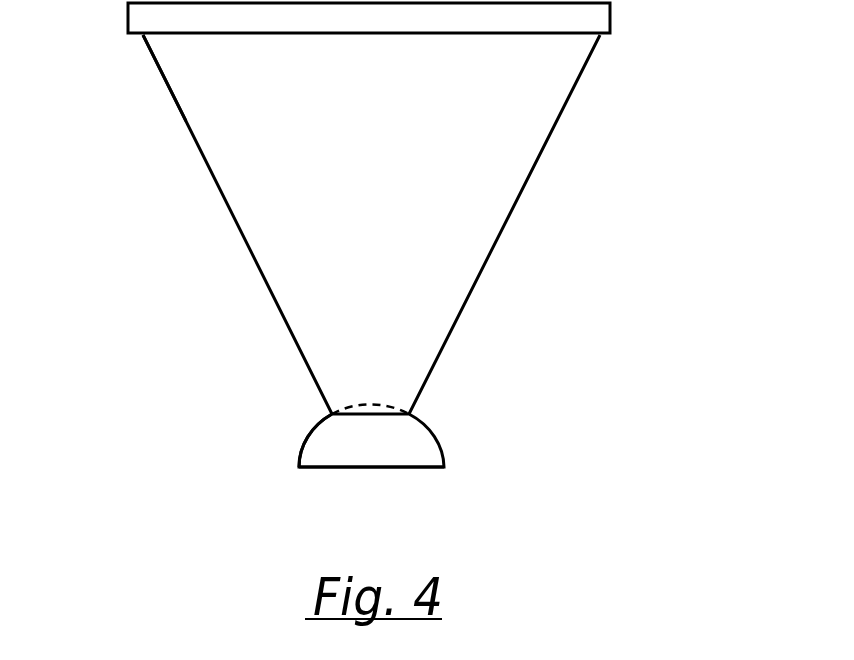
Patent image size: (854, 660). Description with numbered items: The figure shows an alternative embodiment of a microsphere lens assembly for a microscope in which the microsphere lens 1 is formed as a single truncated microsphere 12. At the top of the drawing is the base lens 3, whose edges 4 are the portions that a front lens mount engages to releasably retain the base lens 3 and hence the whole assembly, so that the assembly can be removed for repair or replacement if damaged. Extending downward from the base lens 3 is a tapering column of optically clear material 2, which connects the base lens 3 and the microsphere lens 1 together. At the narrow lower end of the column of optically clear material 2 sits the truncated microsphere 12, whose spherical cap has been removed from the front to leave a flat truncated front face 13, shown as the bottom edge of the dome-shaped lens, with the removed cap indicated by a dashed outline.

The microsphere lens 1 is at (410, 443).
The column of optically clear material 2 is at (468, 260).
The base lens 3 is at (537, 18).
The edges of the base lens 4 is at (141, 37).
The truncated microsphere 12 is at (314, 443).
The truncated front face 13 is at (373, 465).